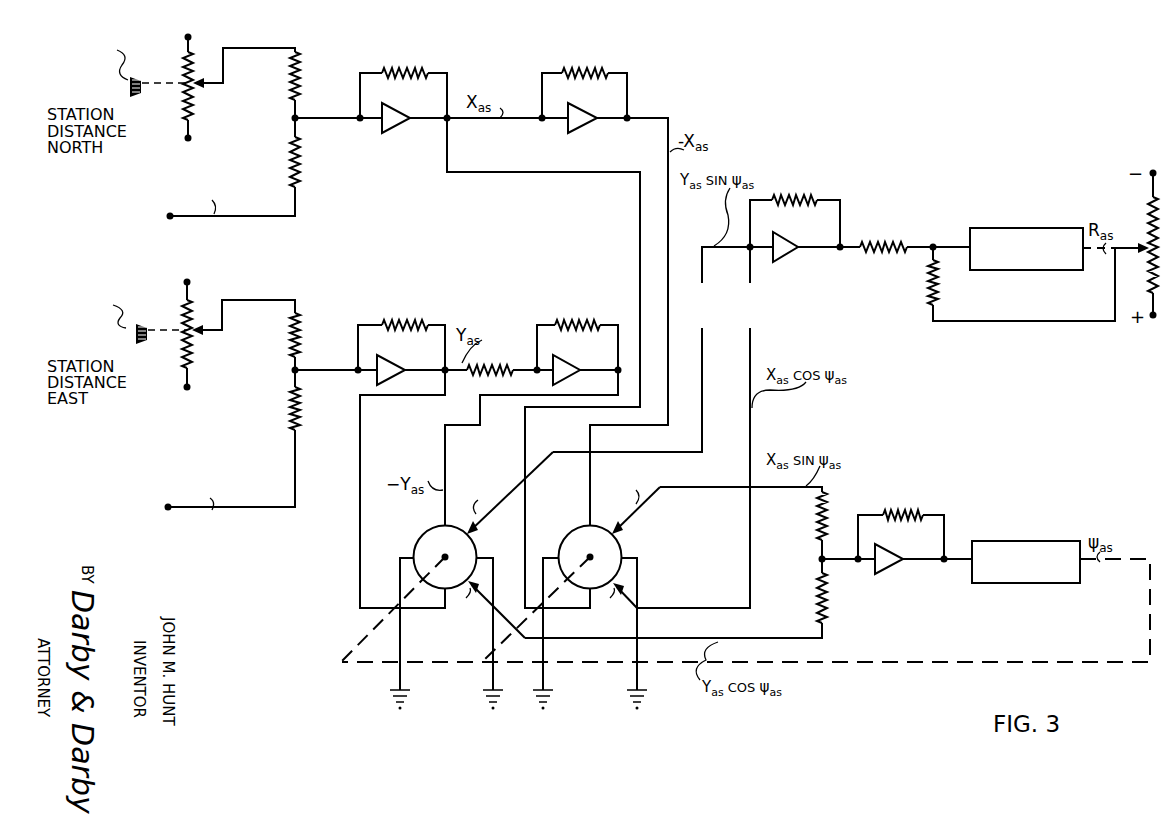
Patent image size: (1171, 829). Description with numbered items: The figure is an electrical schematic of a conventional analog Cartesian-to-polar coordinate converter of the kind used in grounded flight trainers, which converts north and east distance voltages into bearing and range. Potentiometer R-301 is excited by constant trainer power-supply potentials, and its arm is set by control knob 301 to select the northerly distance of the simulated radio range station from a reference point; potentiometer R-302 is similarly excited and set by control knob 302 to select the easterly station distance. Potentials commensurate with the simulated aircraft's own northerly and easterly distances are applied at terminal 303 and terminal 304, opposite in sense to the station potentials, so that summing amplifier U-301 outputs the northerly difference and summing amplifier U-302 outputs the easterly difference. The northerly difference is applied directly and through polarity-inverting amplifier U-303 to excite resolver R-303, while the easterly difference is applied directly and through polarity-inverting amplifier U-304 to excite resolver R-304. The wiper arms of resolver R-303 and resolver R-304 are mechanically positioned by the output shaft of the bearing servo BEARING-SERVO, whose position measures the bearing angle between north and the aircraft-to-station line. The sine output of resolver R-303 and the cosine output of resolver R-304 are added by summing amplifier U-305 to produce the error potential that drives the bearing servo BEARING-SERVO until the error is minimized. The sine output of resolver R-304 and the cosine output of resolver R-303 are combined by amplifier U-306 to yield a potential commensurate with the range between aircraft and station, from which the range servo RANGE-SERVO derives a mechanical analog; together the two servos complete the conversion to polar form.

The control knob 301 is at (141, 82).
The control knob 302 is at (148, 328).
The terminal 303 is at (163, 220).
The terminal 304 is at (163, 500).
The potentiometer R-301 is at (200, 88).
The potentiometer R-302 is at (200, 338).
The resolver R-303 is at (561, 536).
The resolver R-304 is at (415, 536).
The summing amplifier U-301 is at (412, 116).
The summing amplifier U-302 is at (407, 368).
The polarity-inverting feedback amplifier U-303 is at (599, 116).
The polarity-inverting amplifier U-304 is at (582, 368).
The summing amplifier U-305 is at (907, 558).
The amplifier U-306 is at (806, 245).
The range servo RANGE-SERVO is at (1026, 249).
The bearing servo BEARING-SERVO is at (1026, 562).